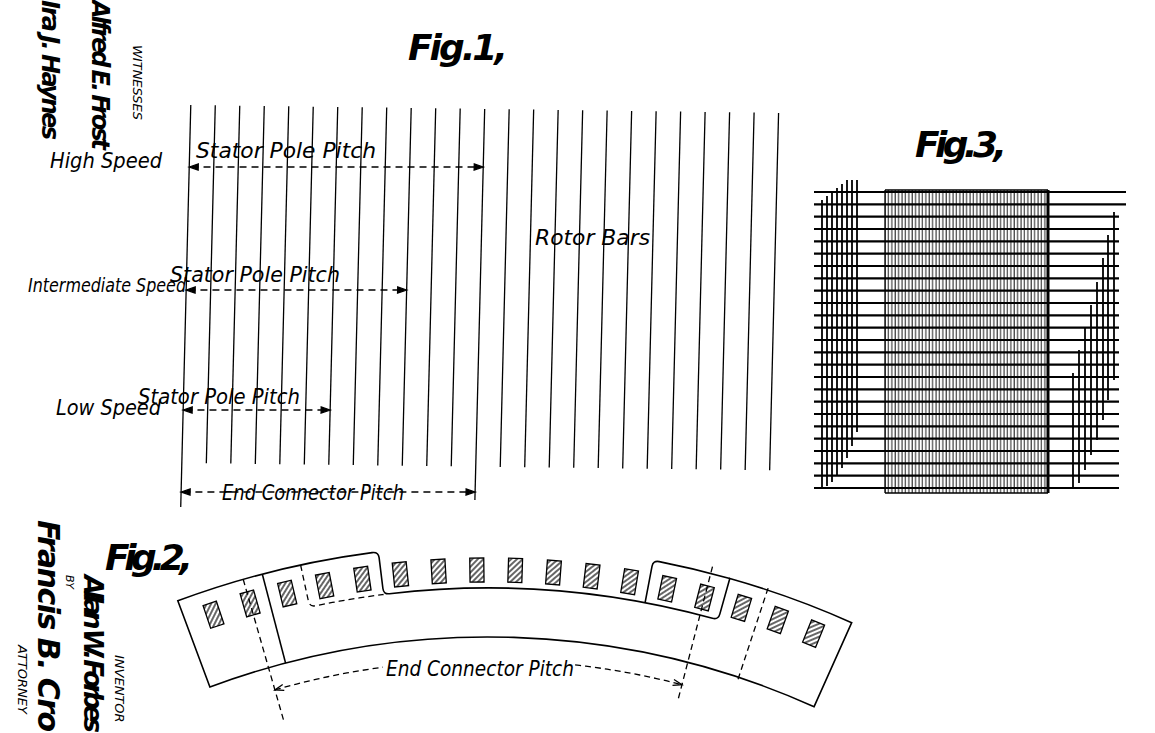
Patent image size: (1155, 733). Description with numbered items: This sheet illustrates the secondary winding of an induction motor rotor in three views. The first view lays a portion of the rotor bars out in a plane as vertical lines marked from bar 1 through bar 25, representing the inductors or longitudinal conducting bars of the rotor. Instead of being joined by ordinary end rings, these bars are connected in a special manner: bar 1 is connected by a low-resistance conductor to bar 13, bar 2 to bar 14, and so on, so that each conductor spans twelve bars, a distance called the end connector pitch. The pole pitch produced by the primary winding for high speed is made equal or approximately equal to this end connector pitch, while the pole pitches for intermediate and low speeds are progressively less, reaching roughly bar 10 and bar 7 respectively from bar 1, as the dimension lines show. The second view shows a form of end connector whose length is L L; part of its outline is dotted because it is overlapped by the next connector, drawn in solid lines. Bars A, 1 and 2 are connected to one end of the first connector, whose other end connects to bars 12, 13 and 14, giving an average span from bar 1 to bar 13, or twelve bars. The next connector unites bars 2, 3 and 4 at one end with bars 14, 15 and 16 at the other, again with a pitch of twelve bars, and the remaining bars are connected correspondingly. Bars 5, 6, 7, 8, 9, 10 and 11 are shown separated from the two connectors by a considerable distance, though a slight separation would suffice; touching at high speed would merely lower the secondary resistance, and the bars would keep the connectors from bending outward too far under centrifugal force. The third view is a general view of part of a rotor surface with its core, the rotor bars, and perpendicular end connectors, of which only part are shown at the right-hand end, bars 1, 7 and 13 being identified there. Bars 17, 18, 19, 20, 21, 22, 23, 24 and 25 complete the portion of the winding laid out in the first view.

In FIG. 1, the rotor bar 1 is at (185, 298).
In FIG. 3, the rotor bar 1 is at (973, 233).
In FIG. 2, the rotor bar 1 is at (247, 587).
In FIG. 1, the rotor bar 2 is at (211, 276).
In FIG. 2, the rotor bar 2 is at (285, 577).
In FIG. 1, the rotor bar 3 is at (235, 277).
In FIG. 2, the rotor bar 3 is at (323, 568).
In FIG. 1, the rotor bar 4 is at (260, 277).
In FIG. 2, the rotor bar 4 is at (361, 562).
In FIG. 1, the rotor bar 5 is at (284, 277).
In FIG. 2, the rotor bar 5 is at (400, 557).
In FIG. 1, the rotor bar 6 is at (309, 278).
In FIG. 2, the rotor bar 6 is at (438, 553).
In FIG. 1, the rotor bar 7 is at (333, 278).
In FIG. 3, the rotor bar 7 is at (974, 303).
In FIG. 2, the rotor bar 7 is at (477, 552).
In FIG. 1, the rotor bar 8 is at (358, 278).
In FIG. 2, the rotor bar 8 is at (515, 552).
In FIG. 1, the rotor bar 9 is at (382, 279).
In FIG. 2, the rotor bar 9 is at (554, 555).
In FIG. 1, the rotor bar 10 is at (406, 279).
In FIG. 2, the rotor bar 10 is at (594, 559).
In FIG. 1, the rotor bar 11 is at (431, 279).
In FIG. 2, the rotor bar 11 is at (632, 564).
In FIG. 1, the rotor bar 12 is at (455, 280).
In FIG. 2, the rotor bar 12 is at (671, 572).
In FIG. 1, the rotor bar 13 is at (480, 297).
In FIG. 3, the rotor bar 13 is at (971, 373).
In FIG. 2, the rotor bar 13 is at (709, 581).
In FIG. 1, the rotor bar 14 is at (504, 280).
In FIG. 2, the rotor bar 14 is at (745, 591).
In FIG. 1, the rotor bar 15 is at (529, 281).
In FIG. 2, the rotor bar 15 is at (783, 604).
In FIG. 1, the rotor bar 16 is at (553, 281).
In FIG. 2, the rotor bar 16 is at (820, 616).
In FIG. 1, the rotor bar 17 is at (578, 281).
In FIG. 1, the rotor bar 18 is at (602, 282).
In FIG. 1, the rotor bar 19 is at (627, 282).
In FIG. 1, the rotor bar 20 is at (651, 282).
In FIG. 1, the rotor bar 21 is at (676, 283).
In FIG. 1, the rotor bar 22 is at (700, 283).
In FIG. 1, the rotor bar 23 is at (725, 283).
In FIG. 1, the rotor bar 24 is at (749, 284).
In FIG. 1, the rotor bar 25 is at (774, 284).
In FIG. 2, the rotor bar A is at (210, 598).
In FIG. 2, the end connector length L is at (472, 698).